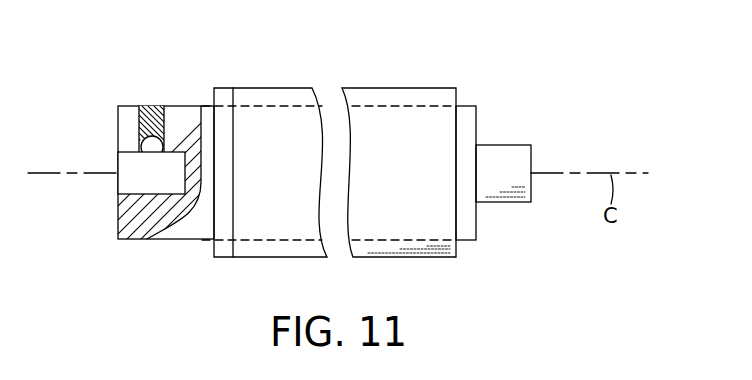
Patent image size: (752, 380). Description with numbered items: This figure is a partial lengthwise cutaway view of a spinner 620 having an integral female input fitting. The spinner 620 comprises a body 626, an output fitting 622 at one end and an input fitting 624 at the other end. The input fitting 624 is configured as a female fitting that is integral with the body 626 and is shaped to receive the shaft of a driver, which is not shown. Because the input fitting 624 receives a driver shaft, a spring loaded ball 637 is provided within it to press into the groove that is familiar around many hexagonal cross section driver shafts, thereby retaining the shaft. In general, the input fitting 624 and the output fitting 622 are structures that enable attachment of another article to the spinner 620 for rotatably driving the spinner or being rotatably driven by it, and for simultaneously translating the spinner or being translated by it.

The spinner 620 is at (386, 62).
The output fitting 622 is at (509, 145).
The input fitting 624 is at (133, 102).
The body 626 is at (195, 228).
The spring loaded ball 637 is at (146, 157).